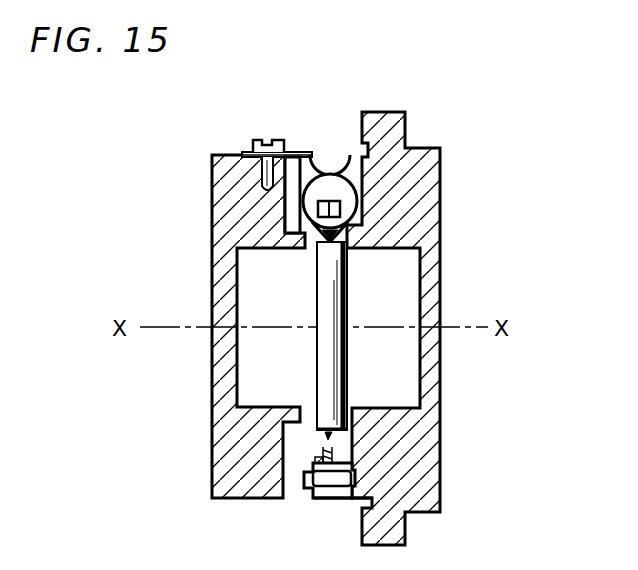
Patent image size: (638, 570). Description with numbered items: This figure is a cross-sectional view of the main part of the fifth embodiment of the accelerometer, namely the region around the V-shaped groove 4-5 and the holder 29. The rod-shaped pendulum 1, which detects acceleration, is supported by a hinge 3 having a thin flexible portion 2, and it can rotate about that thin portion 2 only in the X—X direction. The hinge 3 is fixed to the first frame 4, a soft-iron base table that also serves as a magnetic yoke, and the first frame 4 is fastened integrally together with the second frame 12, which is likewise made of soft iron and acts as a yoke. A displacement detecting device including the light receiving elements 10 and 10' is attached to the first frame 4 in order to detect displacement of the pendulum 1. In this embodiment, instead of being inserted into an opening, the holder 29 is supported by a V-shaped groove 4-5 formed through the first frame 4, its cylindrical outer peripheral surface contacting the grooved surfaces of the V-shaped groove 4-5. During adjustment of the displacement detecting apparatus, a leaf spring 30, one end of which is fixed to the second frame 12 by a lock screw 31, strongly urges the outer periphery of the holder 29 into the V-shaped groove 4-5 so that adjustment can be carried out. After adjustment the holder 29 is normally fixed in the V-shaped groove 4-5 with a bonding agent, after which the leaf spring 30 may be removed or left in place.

The pendulum 1 is at (328, 300).
The thin portion 2 is at (326, 447).
The hinge 3 is at (336, 497).
The first frame 4 is at (430, 460).
The V-shaped groove 4-5 is at (344, 236).
The light receiving element 10 is at (220, 245).
The light receiving element 10' is at (224, 191).
The second frame 12 is at (212, 464).
The holder 29 is at (342, 194).
The leaf spring 30 is at (294, 157).
The lock screw 31 is at (262, 140).